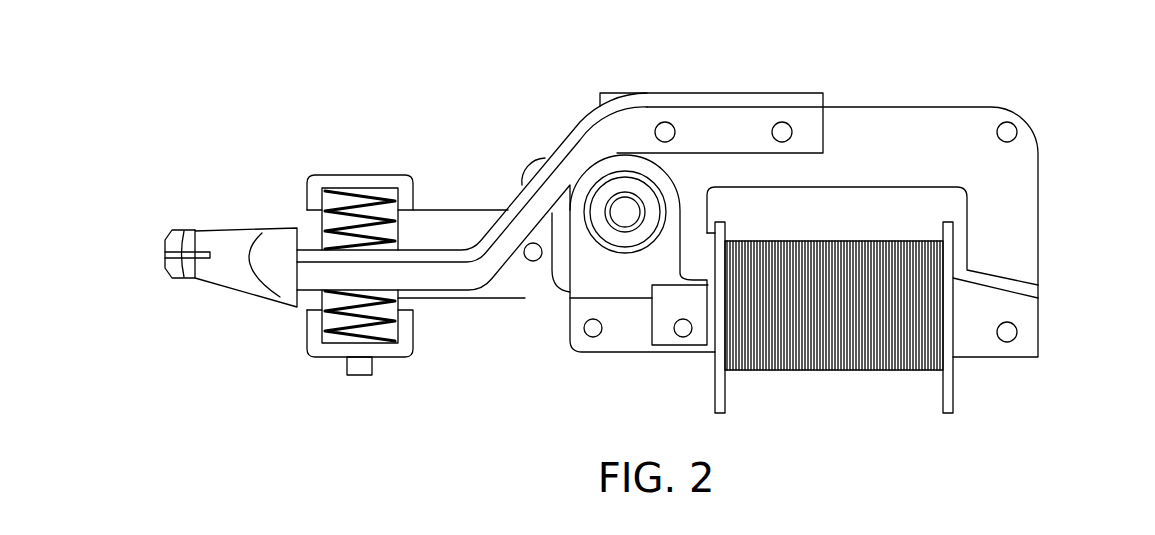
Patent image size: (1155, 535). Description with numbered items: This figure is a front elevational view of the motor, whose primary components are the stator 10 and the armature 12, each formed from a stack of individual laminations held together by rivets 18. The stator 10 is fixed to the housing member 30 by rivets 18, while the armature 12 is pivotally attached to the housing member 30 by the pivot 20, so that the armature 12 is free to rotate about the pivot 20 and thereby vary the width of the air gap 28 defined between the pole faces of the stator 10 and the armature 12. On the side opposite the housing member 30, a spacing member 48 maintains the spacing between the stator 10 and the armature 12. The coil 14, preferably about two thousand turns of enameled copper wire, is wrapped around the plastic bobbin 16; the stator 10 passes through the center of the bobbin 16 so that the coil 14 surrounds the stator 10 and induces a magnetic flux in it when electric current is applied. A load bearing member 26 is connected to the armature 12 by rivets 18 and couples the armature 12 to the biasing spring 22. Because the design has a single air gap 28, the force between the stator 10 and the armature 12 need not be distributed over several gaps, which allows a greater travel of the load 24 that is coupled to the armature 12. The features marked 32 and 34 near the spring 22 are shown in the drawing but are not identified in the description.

The stator 10 is at (970, 335).
The armature 12 is at (1013, 207).
The coil 14 is at (863, 343).
The plastic bobbin 16 is at (947, 407).
The rivets 18 is at (665, 132).
The pivot 20 is at (618, 222).
The biasing spring 22 is at (367, 220).
The load 24 is at (196, 243).
The load bearing member 26 is at (727, 120).
The air gap 28 is at (1028, 290).
The housing member 30 is at (443, 220).
The spring retainer housing 32 is at (410, 178).
The adjustment stem 34 is at (358, 375).
The spacing member 48 is at (597, 277).